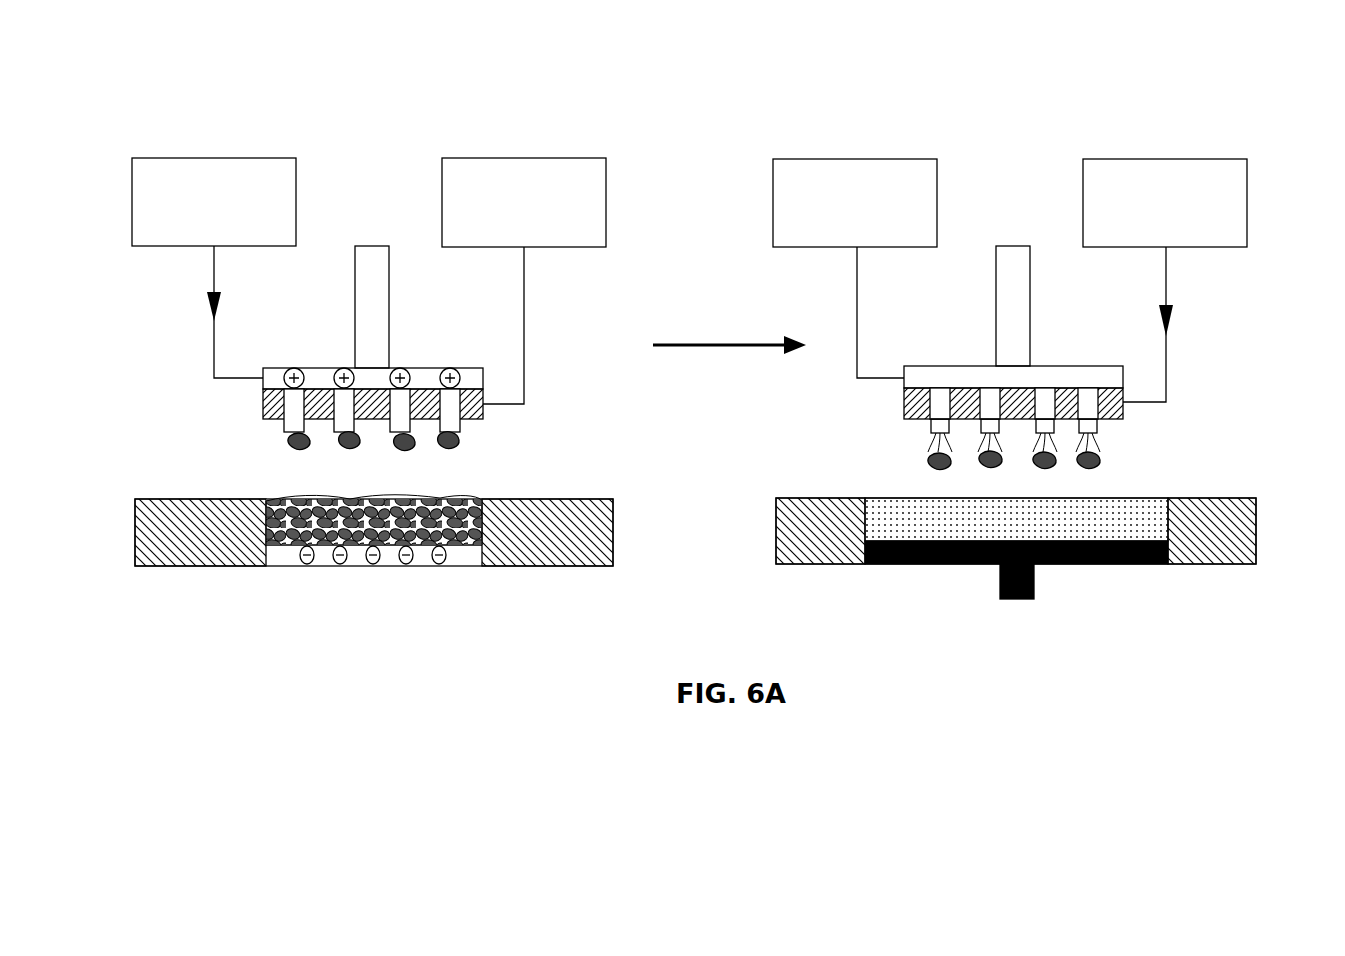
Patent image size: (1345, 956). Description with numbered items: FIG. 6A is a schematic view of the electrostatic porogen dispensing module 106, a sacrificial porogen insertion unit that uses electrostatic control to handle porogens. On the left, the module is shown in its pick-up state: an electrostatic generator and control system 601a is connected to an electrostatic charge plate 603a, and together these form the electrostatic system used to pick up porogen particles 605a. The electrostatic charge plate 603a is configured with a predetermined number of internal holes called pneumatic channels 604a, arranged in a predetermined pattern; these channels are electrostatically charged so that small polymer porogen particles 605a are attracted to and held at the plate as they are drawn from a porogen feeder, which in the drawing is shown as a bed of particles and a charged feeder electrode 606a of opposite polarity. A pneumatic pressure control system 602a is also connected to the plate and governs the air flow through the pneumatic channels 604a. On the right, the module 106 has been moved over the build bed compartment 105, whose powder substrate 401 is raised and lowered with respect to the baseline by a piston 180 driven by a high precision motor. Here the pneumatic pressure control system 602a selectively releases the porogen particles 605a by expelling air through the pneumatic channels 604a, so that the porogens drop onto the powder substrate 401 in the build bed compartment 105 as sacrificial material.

The electrostatic porogen dispensing module 106 is at (299, 99).
The electrostatic generator and control system 601a is at (273, 181).
The pneumatic pressure control system 602a is at (588, 198).
The electrostatic charge plate 603a is at (472, 382).
The pneumatic channels 604a is at (453, 427).
The porogen particles 605a is at (470, 497).
The substrate with charged electrode 606a is at (462, 553).
The powder substrate 401 is at (1098, 525).
The build bed compartment 105 is at (1120, 563).
The piston 180 is at (1052, 566).